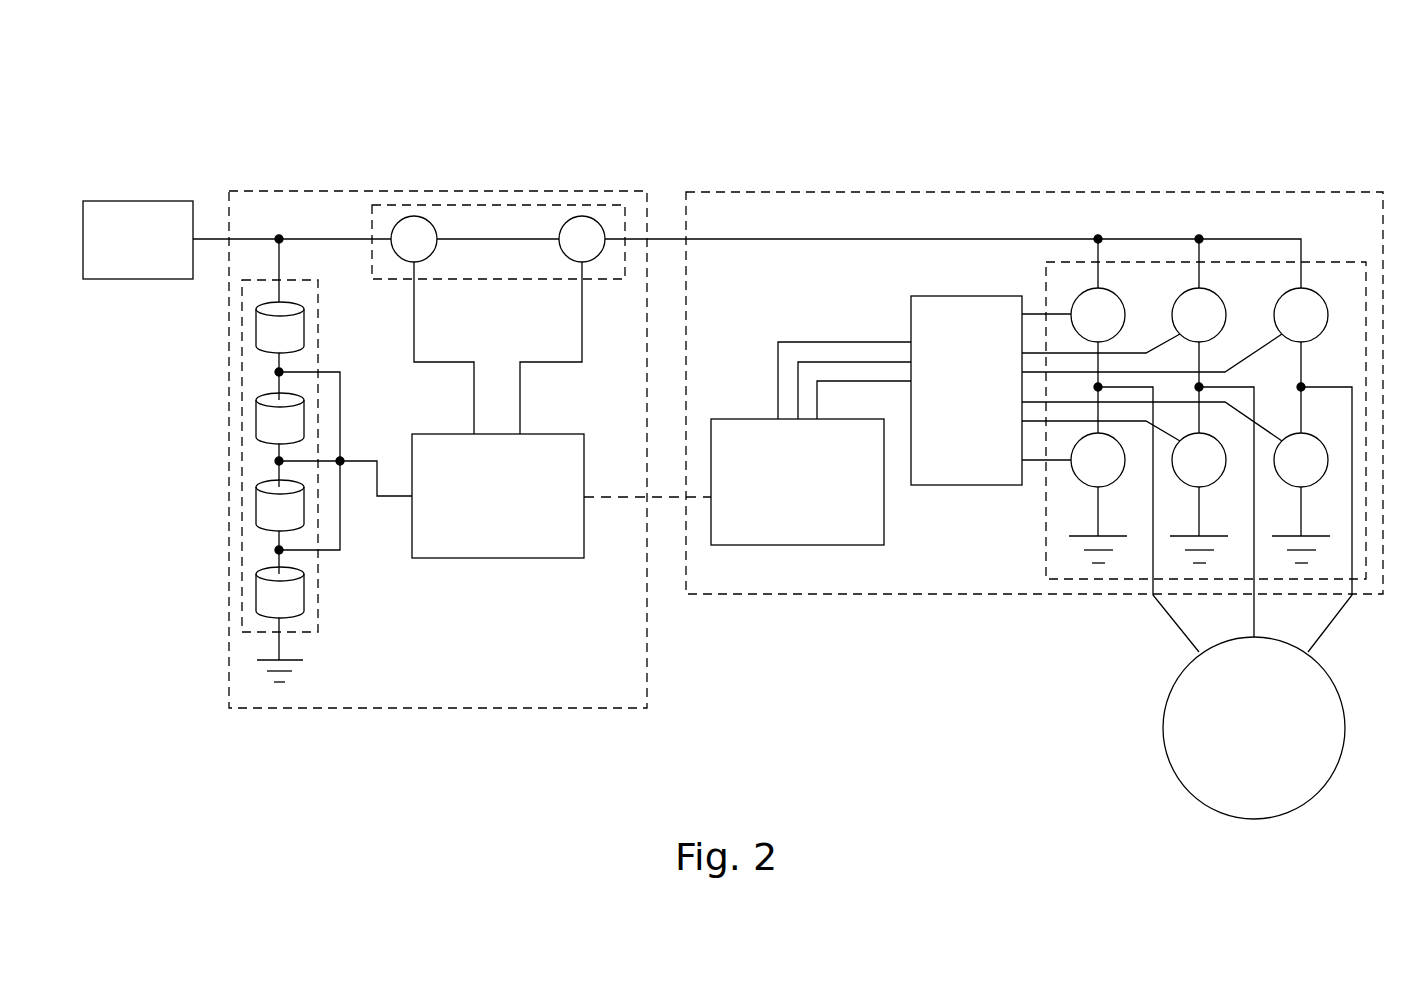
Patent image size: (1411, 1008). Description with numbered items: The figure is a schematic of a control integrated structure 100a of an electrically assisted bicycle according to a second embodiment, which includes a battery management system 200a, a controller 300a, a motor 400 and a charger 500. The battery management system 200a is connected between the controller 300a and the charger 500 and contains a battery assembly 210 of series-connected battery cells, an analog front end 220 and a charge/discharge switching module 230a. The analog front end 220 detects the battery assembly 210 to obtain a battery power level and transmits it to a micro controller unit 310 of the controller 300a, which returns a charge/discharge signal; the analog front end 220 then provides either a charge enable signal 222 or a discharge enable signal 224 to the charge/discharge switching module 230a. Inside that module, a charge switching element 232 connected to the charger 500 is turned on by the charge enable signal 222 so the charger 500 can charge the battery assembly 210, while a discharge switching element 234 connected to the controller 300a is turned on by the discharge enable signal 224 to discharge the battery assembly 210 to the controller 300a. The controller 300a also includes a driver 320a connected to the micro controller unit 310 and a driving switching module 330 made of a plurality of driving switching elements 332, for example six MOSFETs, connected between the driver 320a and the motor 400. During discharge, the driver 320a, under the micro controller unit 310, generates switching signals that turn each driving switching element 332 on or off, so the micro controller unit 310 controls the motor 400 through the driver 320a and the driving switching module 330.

The control integrated structure 100a is at (98, 93).
The charger 500 is at (136, 279).
The battery management system 200a is at (541, 191).
The battery assembly 210 is at (243, 463).
The analog front end 220 is at (497, 558).
The charge enable signal 222 is at (437, 362).
The discharge enable signal 224 is at (558, 362).
The charge/discharge switching module 230a is at (495, 205).
The charge switching element 232 is at (428, 218).
The discharge switching element 234 is at (596, 218).
The controller 300a is at (1272, 192).
The micro controller unit 310 is at (795, 545).
The driver 320a is at (911, 320).
The driving switching module 330 is at (1343, 262).
The driving switching element 332 is at (1199, 387).
The motor 400 is at (1163, 728).